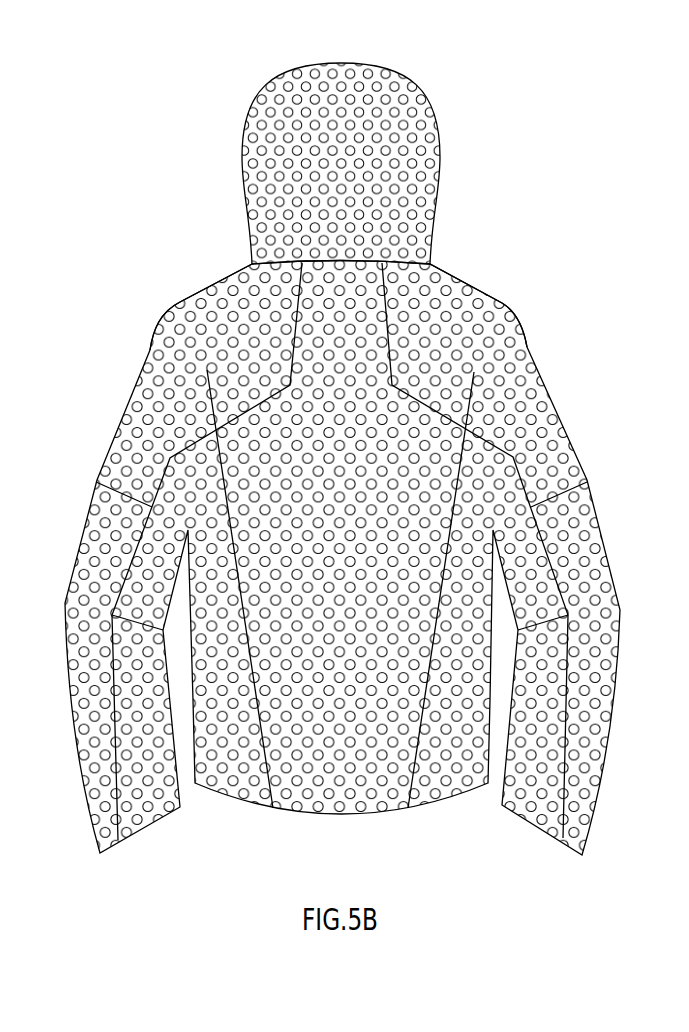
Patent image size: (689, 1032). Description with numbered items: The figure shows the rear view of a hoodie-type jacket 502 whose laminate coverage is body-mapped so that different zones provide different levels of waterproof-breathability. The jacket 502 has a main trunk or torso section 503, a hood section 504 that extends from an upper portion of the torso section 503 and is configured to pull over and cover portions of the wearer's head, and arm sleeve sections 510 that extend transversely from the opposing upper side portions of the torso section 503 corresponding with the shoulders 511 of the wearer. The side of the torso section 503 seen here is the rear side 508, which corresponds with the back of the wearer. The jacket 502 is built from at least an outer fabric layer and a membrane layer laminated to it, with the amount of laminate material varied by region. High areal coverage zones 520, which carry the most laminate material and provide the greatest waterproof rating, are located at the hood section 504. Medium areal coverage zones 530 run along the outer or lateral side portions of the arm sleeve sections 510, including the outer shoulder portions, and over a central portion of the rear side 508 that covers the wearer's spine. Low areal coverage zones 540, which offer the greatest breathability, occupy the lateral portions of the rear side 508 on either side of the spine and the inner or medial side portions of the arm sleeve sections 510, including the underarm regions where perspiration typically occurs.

The hoodie-type jacket 502 is at (470, 91).
The torso section 503 is at (339, 602).
The hood section 504 is at (348, 175).
The rear side 508 is at (393, 460).
The arm sleeve sections 510 is at (556, 548).
The shoulders 511 is at (457, 308).
The high areal coverage zones 520 is at (287, 110).
The medium areal coverage zones 530 is at (233, 320).
The low areal coverage zones 540 is at (240, 748).